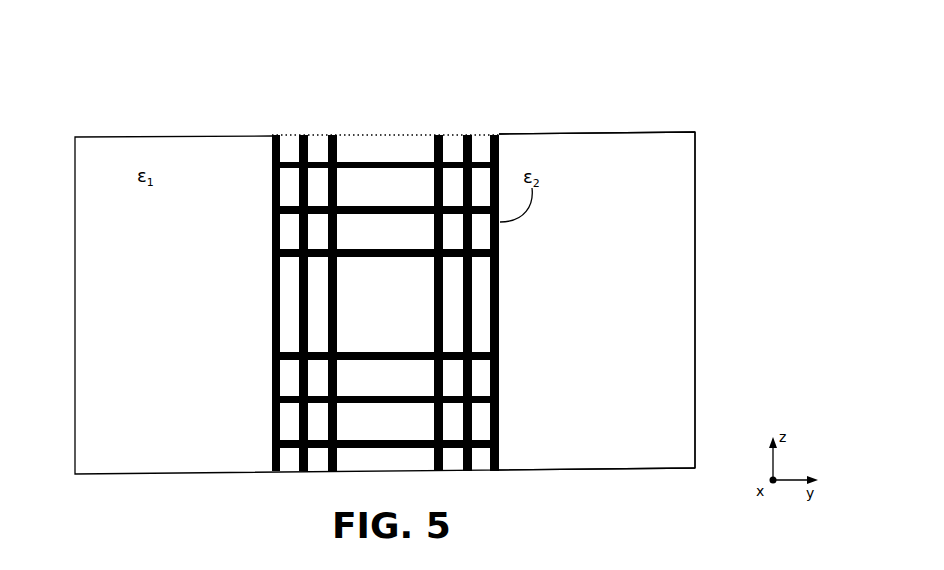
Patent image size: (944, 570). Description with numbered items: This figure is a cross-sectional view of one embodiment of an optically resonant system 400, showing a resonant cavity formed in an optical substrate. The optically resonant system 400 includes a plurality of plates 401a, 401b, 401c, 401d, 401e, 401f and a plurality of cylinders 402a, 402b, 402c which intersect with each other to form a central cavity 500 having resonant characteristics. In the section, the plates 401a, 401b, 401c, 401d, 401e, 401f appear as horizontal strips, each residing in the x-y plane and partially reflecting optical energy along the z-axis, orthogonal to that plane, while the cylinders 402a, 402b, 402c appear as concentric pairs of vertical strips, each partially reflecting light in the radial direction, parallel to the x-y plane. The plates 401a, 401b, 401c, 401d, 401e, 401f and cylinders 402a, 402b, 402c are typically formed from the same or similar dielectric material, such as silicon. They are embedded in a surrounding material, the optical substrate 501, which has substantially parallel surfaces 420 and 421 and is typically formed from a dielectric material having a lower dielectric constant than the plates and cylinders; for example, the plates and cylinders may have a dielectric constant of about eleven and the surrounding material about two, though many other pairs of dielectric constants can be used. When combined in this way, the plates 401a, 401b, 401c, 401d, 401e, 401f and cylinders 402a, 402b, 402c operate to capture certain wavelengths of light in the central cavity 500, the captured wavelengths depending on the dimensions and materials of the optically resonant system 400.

The optically resonant system 400 is at (540, 66).
The plate 401a is at (272, 445).
The plate 401b is at (272, 401).
The plate 401c is at (272, 356).
The plate 401d is at (272, 252).
The plate 401e is at (272, 209).
The plate 401f is at (272, 164).
The cylinder 402a is at (438, 135).
The cylinder 402b is at (467, 135).
The cylinder 402c is at (494, 135).
The surface 420 is at (620, 132).
The surface 421 is at (590, 469).
The central cavity 500 is at (400, 337).
The optical substrate 501 is at (695, 280).